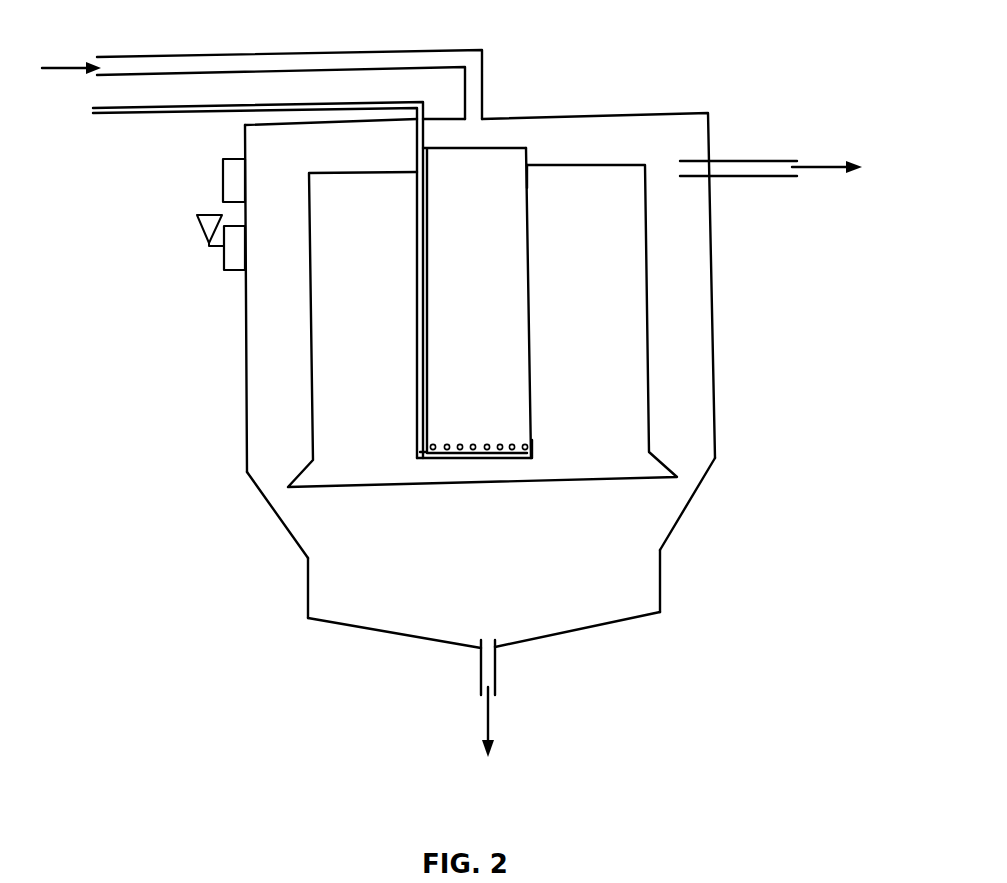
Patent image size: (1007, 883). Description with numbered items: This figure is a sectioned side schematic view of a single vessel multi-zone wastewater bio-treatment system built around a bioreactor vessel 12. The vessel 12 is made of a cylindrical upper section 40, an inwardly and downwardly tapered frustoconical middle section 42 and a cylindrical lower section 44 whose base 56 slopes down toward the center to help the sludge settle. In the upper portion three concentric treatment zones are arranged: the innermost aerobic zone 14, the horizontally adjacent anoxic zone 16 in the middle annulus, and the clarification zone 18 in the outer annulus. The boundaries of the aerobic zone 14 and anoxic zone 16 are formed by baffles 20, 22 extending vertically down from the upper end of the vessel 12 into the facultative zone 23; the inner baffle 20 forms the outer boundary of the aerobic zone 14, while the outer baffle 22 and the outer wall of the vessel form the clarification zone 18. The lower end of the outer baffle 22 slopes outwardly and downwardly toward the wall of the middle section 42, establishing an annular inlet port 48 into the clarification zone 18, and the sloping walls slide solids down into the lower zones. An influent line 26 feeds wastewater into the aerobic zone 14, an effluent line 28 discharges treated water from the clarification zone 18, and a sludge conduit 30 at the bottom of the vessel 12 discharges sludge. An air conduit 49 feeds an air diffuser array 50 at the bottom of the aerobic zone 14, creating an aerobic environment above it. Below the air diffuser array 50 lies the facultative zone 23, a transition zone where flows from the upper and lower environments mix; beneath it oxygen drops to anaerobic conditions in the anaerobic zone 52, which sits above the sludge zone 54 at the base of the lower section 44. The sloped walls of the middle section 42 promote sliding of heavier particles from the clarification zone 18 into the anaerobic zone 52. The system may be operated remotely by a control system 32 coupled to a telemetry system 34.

The vessel 12 is at (722, 421).
The aerobic zone 14 is at (488, 168).
The anoxic zone 16 is at (617, 322).
The clarification zone 18 is at (527, 188).
The inner baffle 20 is at (530, 265).
The outer baffle 22 is at (308, 259).
The facultative zone 23 is at (481, 514).
The influent line 26 is at (178, 57).
The effluent line 28 is at (767, 161).
The sludge conduit 30 is at (480, 667).
The control system 32 is at (222, 178).
The telemetry system 34 is at (220, 254).
The cylindrical upper section 40 is at (247, 430).
The frustoconical middle section 42 is at (249, 477).
The cylindrical lower section 44 is at (308, 583).
The annular inlet port 48 is at (688, 475).
The air conduit 49 is at (183, 113).
The air diffuser array 50 is at (485, 455).
The anaerobic zone 52 is at (483, 568).
The sludge zone 54 is at (484, 618).
The base 56 is at (358, 627).